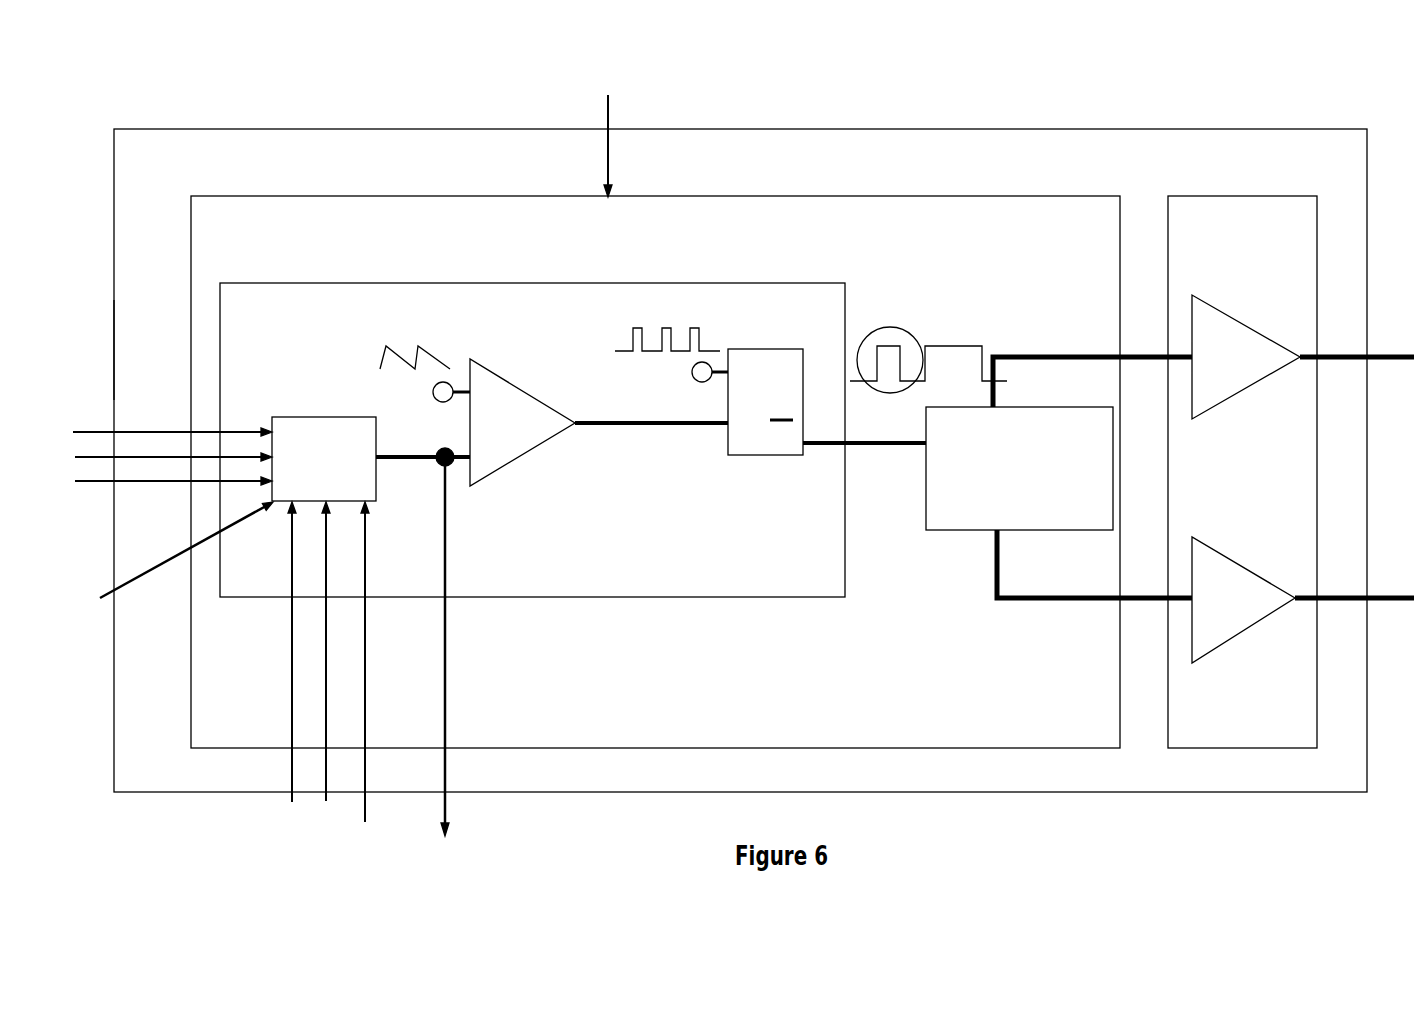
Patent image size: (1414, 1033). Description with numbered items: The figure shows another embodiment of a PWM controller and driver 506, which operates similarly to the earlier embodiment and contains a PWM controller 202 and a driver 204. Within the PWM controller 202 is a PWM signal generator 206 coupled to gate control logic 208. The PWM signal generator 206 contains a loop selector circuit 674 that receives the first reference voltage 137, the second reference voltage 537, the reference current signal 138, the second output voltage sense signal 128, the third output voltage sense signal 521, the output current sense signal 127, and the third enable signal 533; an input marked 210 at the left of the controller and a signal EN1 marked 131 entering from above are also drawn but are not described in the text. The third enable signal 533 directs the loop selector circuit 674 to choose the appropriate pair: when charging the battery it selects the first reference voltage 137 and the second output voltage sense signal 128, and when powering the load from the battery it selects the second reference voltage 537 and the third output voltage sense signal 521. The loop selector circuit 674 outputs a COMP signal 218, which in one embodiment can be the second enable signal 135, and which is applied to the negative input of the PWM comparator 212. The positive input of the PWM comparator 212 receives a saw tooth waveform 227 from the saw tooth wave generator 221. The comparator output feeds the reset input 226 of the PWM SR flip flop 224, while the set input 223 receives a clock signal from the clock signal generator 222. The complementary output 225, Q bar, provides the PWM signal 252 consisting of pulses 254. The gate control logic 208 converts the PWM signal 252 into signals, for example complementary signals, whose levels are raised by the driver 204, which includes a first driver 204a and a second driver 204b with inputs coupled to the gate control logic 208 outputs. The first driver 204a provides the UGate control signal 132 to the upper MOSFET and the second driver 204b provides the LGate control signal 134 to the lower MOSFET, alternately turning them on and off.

The PWM controller and driver 506 is at (740, 460).
The input 210 is at (143, 350).
The PWM controller 202 is at (655, 472).
The PWM signal generator 206 is at (532, 440).
The enable signal EN1 131 is at (608, 146).
The loop selector circuit 674 is at (324, 439).
The first reference voltage 137 is at (164, 413).
The second reference voltage 537 is at (164, 463).
The reference current signal 138 is at (172, 497).
The third enable signal 533 is at (170, 562).
The third output voltage sense signal 521 is at (290, 672).
The second output voltage sense signal 128 is at (322, 672).
The output current sense signal 127 is at (383, 666).
The saw tooth waveform 227 is at (391, 359).
The saw tooth wave generator 221 is at (556, 419).
The COMP signal 218 is at (423, 459).
The second enable signal 135 is at (472, 651).
The PWM comparator 212 is at (522, 422).
The reset input 226 is at (670, 321).
The clock signal generator 222 is at (675, 377).
The set input 223 is at (719, 390).
The PWM SR flip flop 224 is at (765, 402).
The complementary output 225 is at (864, 471).
The pulses 254 is at (890, 342).
The PWM signal 252 is at (932, 389).
The gate control logic 208 is at (1059, 477).
The driver 204 is at (1242, 472).
The first driver 204a is at (1246, 357).
The second driver 204b is at (1243, 600).
The UGate control signal 132 is at (1357, 359).
The LGate control signal 134 is at (1354, 604).